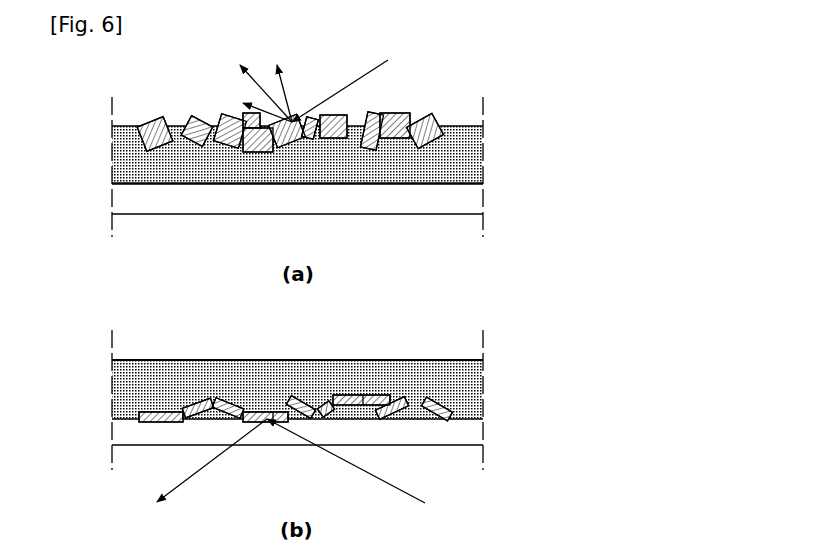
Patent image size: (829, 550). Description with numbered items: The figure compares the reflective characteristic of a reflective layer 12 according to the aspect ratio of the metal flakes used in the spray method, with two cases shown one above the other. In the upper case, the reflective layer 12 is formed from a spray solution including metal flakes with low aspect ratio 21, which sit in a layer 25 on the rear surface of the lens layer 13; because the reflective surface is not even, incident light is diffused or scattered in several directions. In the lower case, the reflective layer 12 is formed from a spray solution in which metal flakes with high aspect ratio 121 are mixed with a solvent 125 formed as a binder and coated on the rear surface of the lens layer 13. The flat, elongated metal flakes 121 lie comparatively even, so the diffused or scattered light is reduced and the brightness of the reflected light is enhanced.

The metal flakes with low aspect ratio 21 is at (152, 122).
The binder layer 25 is at (126, 163).
The lens layer 13 is at (475, 202).
The reflective layer 12 is at (350, 384).
The solvent 125 is at (475, 381).
The metal flake 121 is at (475, 408).